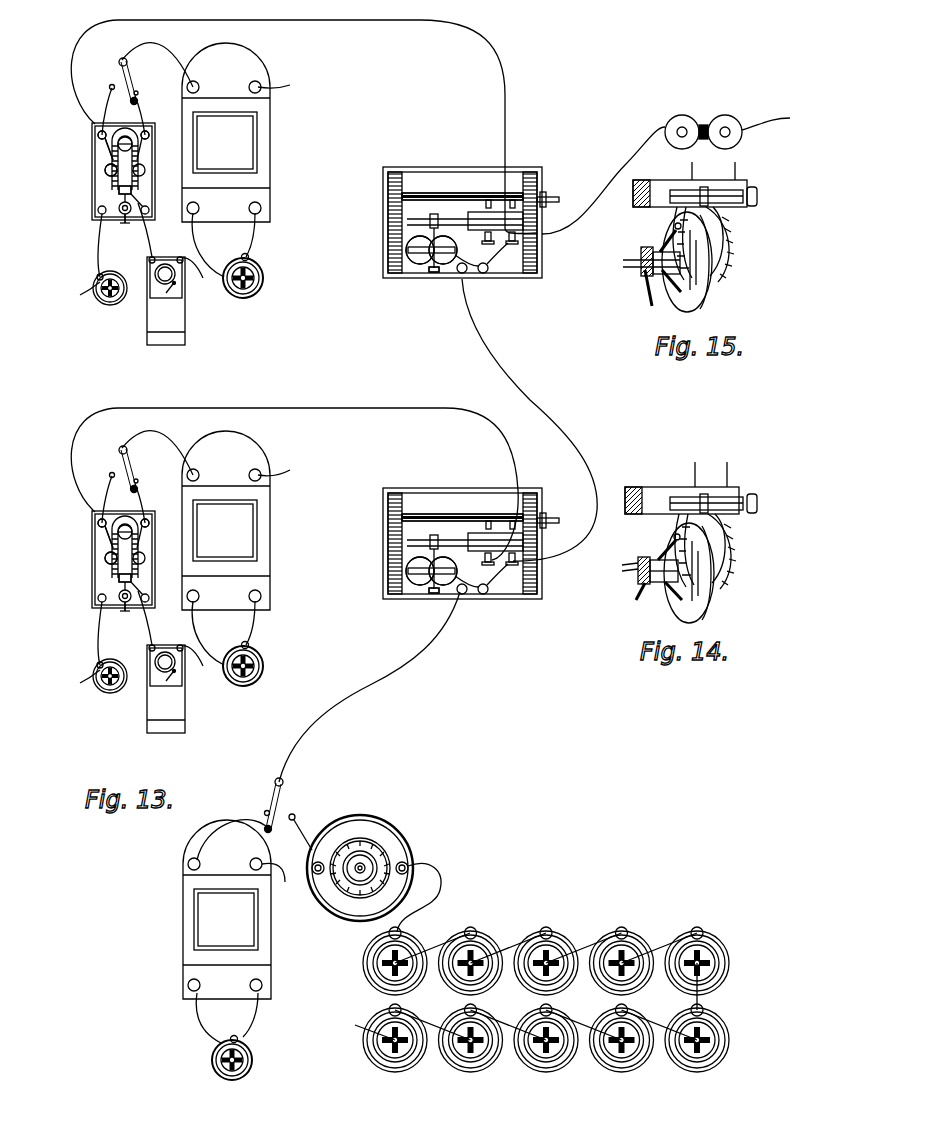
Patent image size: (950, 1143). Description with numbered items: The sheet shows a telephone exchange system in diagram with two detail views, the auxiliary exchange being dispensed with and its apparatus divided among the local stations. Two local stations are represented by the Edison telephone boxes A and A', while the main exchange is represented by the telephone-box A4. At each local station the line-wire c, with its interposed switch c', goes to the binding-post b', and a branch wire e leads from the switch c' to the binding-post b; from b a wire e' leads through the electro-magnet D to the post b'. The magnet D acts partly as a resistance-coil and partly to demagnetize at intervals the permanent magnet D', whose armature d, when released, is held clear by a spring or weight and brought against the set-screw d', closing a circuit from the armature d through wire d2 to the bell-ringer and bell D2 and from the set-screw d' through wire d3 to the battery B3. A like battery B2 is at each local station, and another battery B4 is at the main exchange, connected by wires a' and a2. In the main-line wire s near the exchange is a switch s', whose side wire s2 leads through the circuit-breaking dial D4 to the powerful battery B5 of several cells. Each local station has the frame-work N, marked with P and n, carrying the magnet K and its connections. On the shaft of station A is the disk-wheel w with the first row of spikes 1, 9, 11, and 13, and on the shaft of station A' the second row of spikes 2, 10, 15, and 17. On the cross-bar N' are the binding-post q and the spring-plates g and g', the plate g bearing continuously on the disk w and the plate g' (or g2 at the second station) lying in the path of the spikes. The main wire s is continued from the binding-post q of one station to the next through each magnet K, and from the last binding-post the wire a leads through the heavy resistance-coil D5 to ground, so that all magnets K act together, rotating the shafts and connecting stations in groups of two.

In FIG. 13, the line-wire c is at (304, 289).
In FIG. 14, the line-wire c is at (693, 467).
In FIG. 13, the switch c' is at (135, 275).
In FIG. 13, the ground-wire a is at (183, 486).
In FIG. 15, the ground-wire a is at (769, 120).
In FIG. 13, the telephone box A' is at (226, 132).
In FIG. 13, the telephone box A is at (226, 520).
In FIG. 13, the telephone-box of main exchange A4 is at (227, 909).
In FIG. 13, the binding-post b is at (154, 327).
In FIG. 13, the binding-post b' is at (90, 328).
In FIG. 13, the branch wire e is at (145, 307).
In FIG. 13, the wire e' is at (128, 343).
In FIG. 13, the electro-magnet D is at (131, 367).
In FIG. 13, the fixed or permanent magnet D' is at (96, 368).
In FIG. 13, the armature d is at (117, 383).
In FIG. 13, the set-screw d' is at (130, 422).
In FIG. 13, the wire d2 is at (151, 424).
In FIG. 13, the wire d3 is at (112, 439).
In FIG. 13, the wire a' is at (208, 628).
In FIG. 13, the wire a2 is at (255, 625).
In FIG. 13, the battery B2 is at (252, 470).
In FIG. 13, the battery B3 is at (110, 491).
In FIG. 13, the battery B4 is at (243, 1058).
In FIG. 13, the powerful battery B5 is at (542, 994).
In FIG. 13, the bell-ringer and bell D2 is at (175, 495).
In FIG. 13, the circuit-breaking dial D4 is at (374, 870).
In FIG. 15, the heavy resistance-coil D5 is at (642, 166).
In FIG. 13, the frame-work N is at (471, 383).
In FIG. 13, the bar P is at (462, 350).
In FIG. 13, the magnet K is at (435, 410).
In FIG. 13, the armature base n is at (424, 262).
In FIG. 13, the main-line wire s is at (397, 523).
In FIG. 14, the main-line wire s is at (725, 467).
In FIG. 13, the switch s' is at (279, 805).
In FIG. 13, the branch or side wire s2 is at (300, 832).
In FIG. 15, the cross-bar N' is at (690, 184).
In FIG. 14, the cross-bar N' is at (682, 492).
In FIG. 15, the binding-post q is at (720, 197).
In FIG. 14, the binding-post q is at (719, 504).
In FIG. 15, the spring-plate g is at (721, 244).
In FIG. 14, the spring-plate g is at (723, 551).
In FIG. 14, the spring-plate g' is at (674, 550).
In FIG. 15, the spring or plate g2 is at (676, 222).
In FIG. 15, the disk-wheel w is at (687, 262).
In FIG. 14, the disk-wheel w is at (689, 573).
In FIG. 15, the spike 10 is at (642, 263).
In FIG. 15, the spike 2 is at (645, 272).
In FIG. 15, the spike 15 is at (658, 274).
In FIG. 15, the spike 17 is at (680, 294).
In FIG. 14, the spike 9 is at (631, 570).
In FIG. 14, the spike 11 is at (650, 578).
In FIG. 14, the spike 13 is at (651, 574).
In FIG. 14, the spike 1 is at (673, 590).